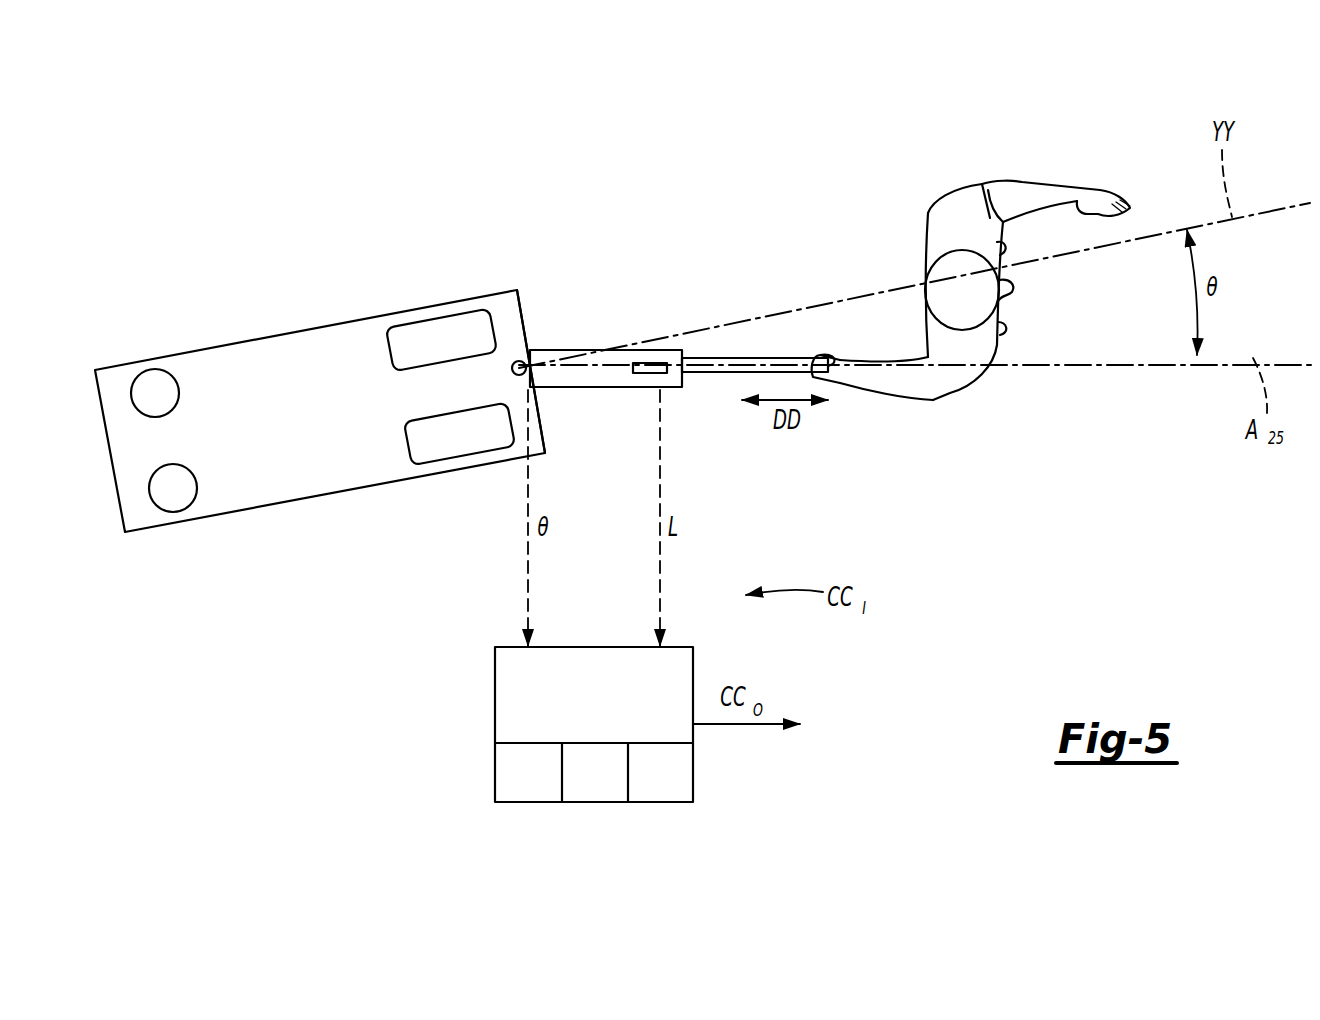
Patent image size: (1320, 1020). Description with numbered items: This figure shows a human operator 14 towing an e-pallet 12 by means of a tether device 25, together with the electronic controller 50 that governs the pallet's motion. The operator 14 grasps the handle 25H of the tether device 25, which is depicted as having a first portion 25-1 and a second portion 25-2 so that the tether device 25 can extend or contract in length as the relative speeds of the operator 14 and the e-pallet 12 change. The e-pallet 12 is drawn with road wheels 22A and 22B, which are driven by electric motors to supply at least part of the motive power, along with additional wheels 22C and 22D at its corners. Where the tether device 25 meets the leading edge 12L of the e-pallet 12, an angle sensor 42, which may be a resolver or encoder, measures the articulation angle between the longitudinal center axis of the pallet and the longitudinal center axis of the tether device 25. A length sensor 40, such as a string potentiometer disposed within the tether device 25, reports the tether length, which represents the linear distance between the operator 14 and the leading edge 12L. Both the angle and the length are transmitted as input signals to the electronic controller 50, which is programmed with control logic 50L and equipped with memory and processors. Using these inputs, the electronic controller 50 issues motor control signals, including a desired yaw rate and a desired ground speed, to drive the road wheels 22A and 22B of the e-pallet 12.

The e-pallet 12 is at (313, 428).
The leading edge 12L is at (541, 412).
The human operator 14 is at (951, 168).
The road wheel 22A is at (433, 317).
The road wheel 22B is at (462, 458).
The first caster wheel 22C is at (147, 371).
The second caster wheel 22D is at (177, 511).
The tether device 25 is at (914, 365).
The first handle segment 25-1 is at (578, 350).
The second handle segment 25-2 is at (703, 375).
The handle 25H is at (806, 345).
The length sensor 40 is at (650, 363).
The angle sensor 42 is at (521, 378).
The electronic controller 50 is at (594, 724).
The control logic 50L is at (539, 772).